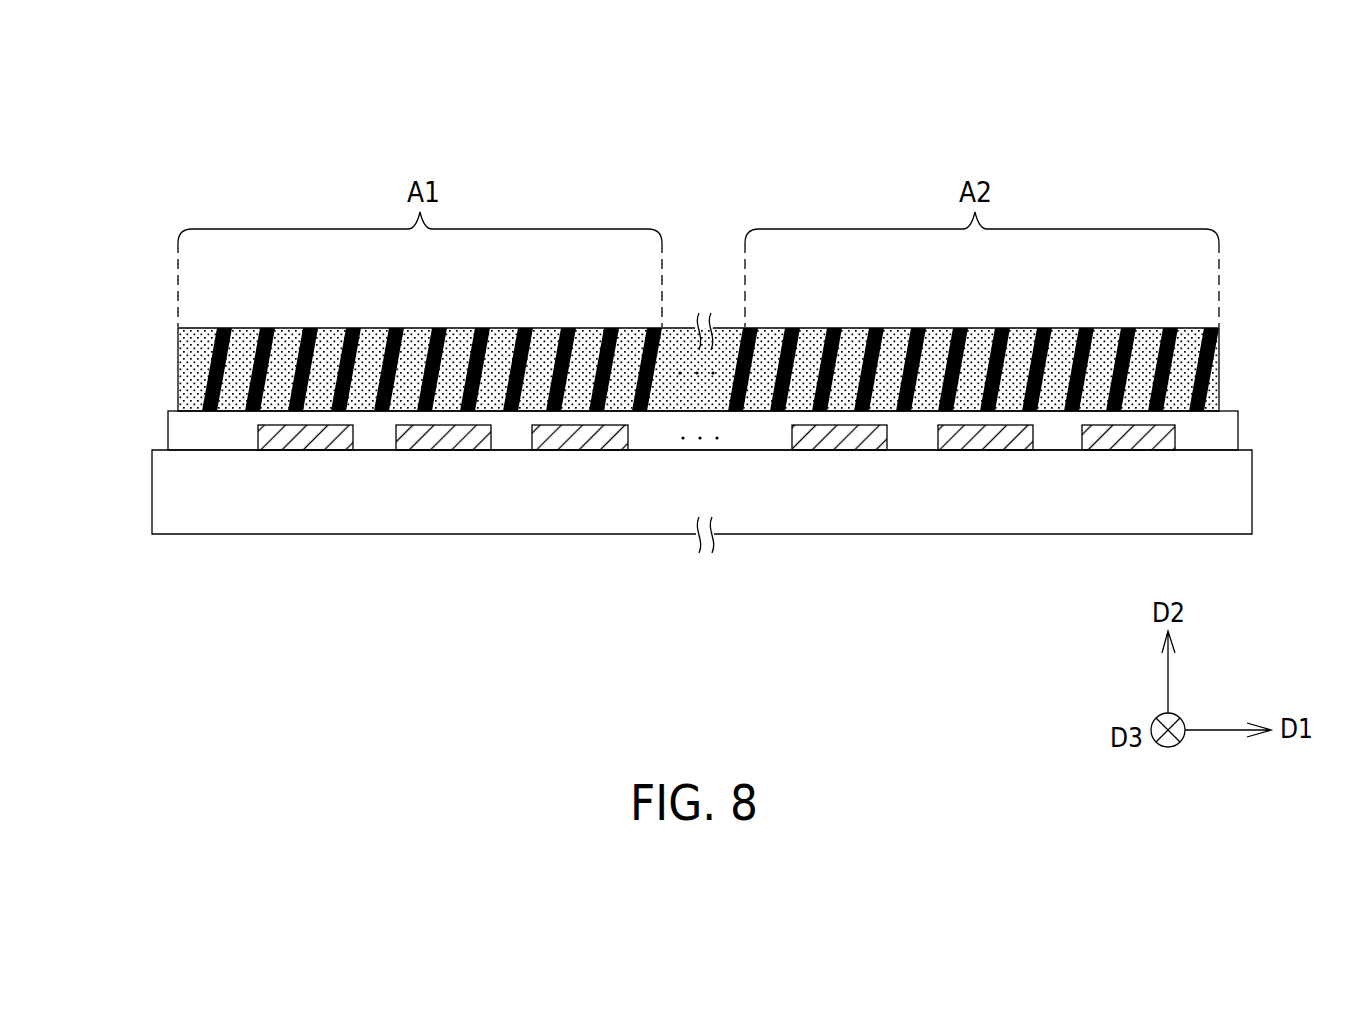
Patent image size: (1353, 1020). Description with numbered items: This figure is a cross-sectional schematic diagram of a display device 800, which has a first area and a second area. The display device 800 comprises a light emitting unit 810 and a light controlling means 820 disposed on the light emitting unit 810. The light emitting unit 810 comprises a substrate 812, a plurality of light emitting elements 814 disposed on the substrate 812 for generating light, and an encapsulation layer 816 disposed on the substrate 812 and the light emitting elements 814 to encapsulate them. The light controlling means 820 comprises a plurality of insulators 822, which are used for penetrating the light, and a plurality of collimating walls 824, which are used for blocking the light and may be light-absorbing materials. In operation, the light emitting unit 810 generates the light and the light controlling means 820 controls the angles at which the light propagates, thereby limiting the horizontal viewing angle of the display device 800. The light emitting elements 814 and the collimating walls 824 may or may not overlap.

The display device 800 is at (1137, 106).
The light emitting unit 810 is at (138, 412).
The substrate 812 is at (1233, 492).
The light emitting elements 814 is at (988, 442).
The encapsulation layer 816 is at (1220, 430).
The light controlling means 820 is at (157, 328).
The insulators 822 is at (1212, 375).
The collimating walls 824 is at (1128, 328).